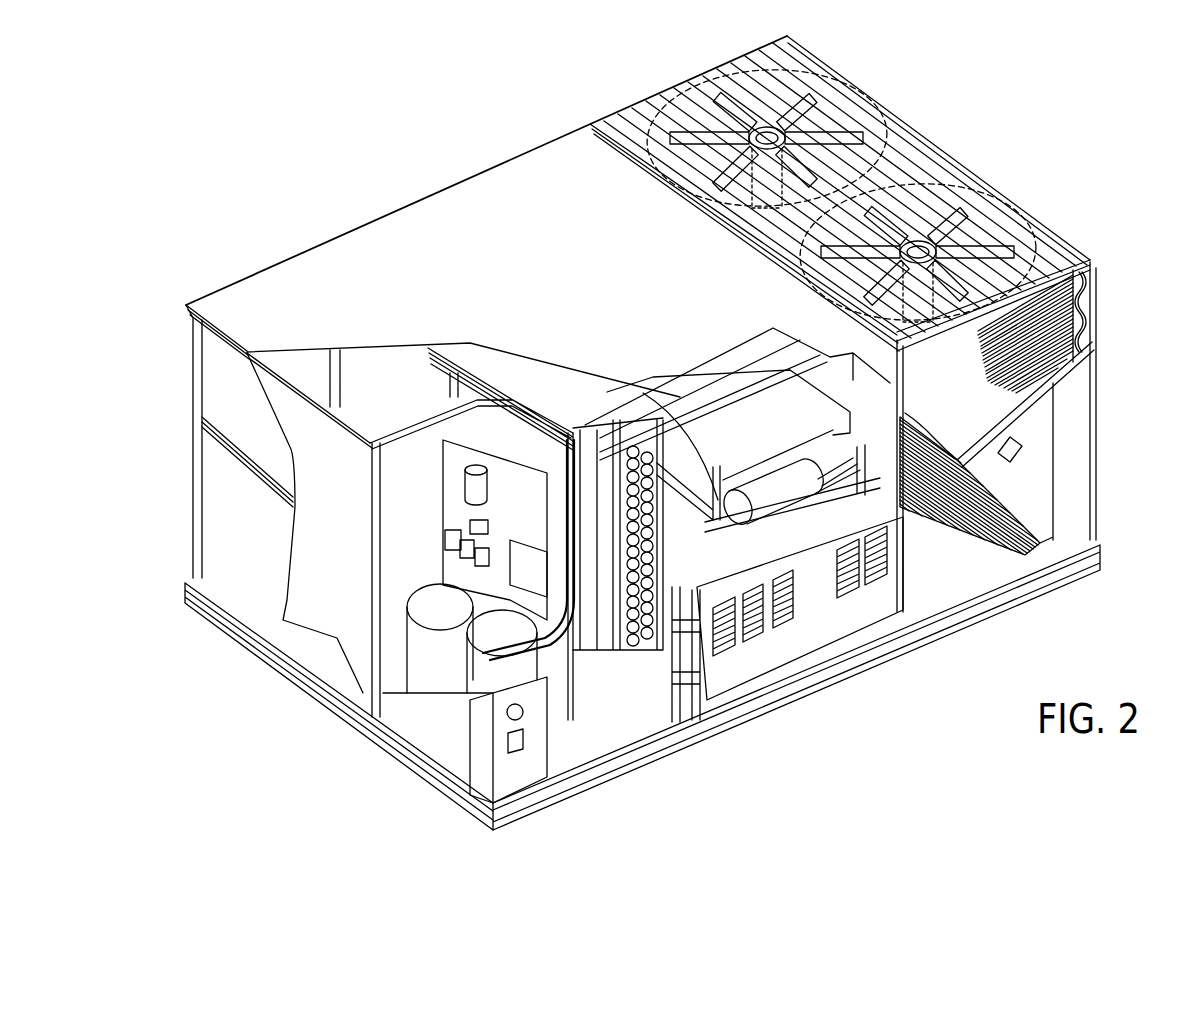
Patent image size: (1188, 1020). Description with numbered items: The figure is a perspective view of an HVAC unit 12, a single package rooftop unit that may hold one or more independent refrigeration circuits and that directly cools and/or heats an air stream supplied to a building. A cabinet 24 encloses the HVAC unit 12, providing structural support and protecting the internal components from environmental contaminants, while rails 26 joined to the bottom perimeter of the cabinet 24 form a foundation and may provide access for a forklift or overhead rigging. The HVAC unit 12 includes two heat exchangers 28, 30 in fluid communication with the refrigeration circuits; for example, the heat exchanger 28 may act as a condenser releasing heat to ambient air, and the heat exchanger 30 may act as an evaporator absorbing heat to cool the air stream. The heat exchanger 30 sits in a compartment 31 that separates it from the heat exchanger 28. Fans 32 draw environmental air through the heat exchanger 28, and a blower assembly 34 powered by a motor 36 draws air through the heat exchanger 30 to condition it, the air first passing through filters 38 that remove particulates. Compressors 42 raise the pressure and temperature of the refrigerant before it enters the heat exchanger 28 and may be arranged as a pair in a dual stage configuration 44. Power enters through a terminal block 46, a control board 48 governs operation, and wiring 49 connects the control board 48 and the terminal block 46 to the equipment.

The HVAC unit 12 is at (370, 138).
The cabinet 24 is at (230, 553).
The rails 26 is at (247, 657).
The heat exchanger 28 is at (1095, 313).
The heat exchanger 30 is at (650, 657).
The compartment 31 is at (683, 463).
The fans 32 is at (937, 210).
The blower assembly 34 is at (833, 447).
The motor 36 is at (770, 493).
The filters 38 is at (603, 445).
The compressors 42 is at (413, 637).
The dual stage configuration 44 is at (405, 588).
The terminal block 46 is at (470, 527).
The control board 48 is at (530, 543).
The wiring 49 is at (620, 430).